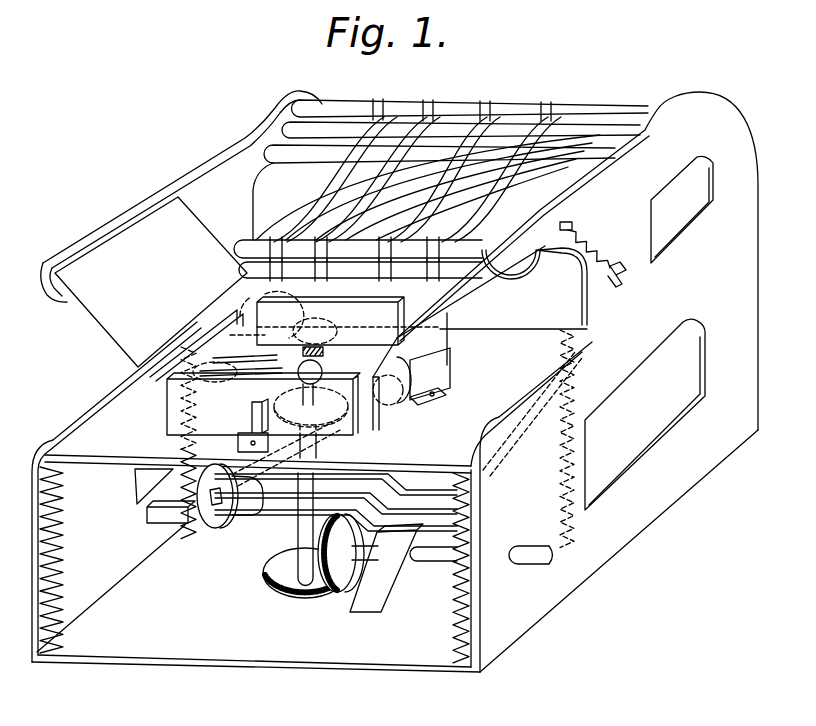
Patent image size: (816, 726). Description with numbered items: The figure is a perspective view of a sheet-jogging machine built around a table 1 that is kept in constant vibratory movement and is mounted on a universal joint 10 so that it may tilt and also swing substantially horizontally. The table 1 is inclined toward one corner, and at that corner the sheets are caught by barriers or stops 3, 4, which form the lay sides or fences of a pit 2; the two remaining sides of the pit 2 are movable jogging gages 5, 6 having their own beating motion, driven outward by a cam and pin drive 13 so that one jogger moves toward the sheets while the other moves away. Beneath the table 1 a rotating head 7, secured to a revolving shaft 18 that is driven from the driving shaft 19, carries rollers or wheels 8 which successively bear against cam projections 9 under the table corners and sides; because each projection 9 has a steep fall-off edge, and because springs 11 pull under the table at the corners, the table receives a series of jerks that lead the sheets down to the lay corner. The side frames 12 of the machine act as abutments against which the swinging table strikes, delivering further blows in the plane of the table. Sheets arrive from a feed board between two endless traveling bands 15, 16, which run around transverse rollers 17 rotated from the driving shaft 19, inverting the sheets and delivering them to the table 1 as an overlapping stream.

The table 1 is at (504, 328).
The pit 2 is at (245, 361).
The barrier or stop 3 is at (172, 408).
The barrier or stop 4 is at (452, 361).
The jogging gage 5 is at (383, 305).
The jogging gage 6 is at (243, 310).
The rotating head 7 is at (372, 425).
The roller or wheel 8 is at (397, 410).
The cam or projection 9 is at (300, 304).
The universal joint 10 is at (323, 371).
The spring 11 is at (183, 448).
The side frame 12 is at (533, 549).
The cam and pin drive 13 is at (345, 433).
The endless traveling band 15 is at (340, 188).
The endless traveling band 16 is at (318, 230).
The roller 17 is at (330, 137).
The revolving shaft 18 is at (298, 546).
The driving shaft 19 is at (437, 563).